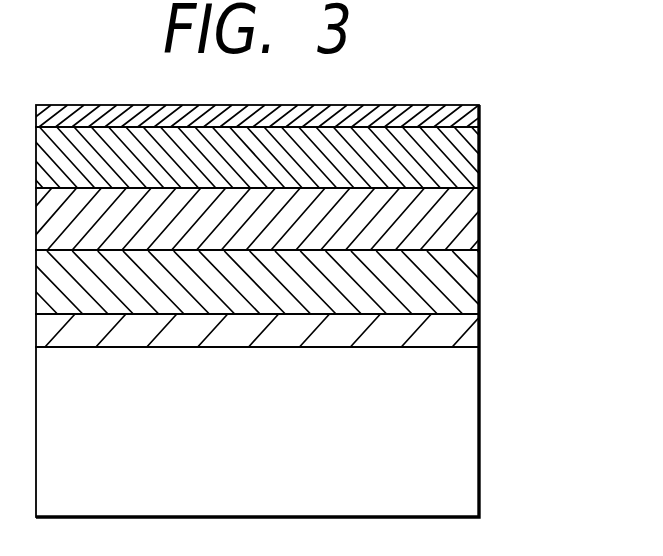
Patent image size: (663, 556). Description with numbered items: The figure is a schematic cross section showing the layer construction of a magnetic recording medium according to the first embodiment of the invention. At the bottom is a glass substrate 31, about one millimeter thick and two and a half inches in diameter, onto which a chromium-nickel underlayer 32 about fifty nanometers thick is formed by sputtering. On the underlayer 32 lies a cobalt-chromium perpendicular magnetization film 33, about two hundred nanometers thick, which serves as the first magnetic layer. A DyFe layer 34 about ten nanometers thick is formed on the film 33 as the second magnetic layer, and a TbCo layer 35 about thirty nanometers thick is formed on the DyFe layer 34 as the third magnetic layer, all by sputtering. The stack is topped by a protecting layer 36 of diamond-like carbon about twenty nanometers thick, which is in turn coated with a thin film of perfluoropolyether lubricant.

The glass substrate 31 is at (471, 392).
The underlayer 32 is at (471, 333).
The perpendicular magnetization film 33 is at (471, 284).
The DyFe layer 34 is at (471, 216).
The TbCo layer 35 is at (471, 161).
The protecting layer 36 is at (472, 116).